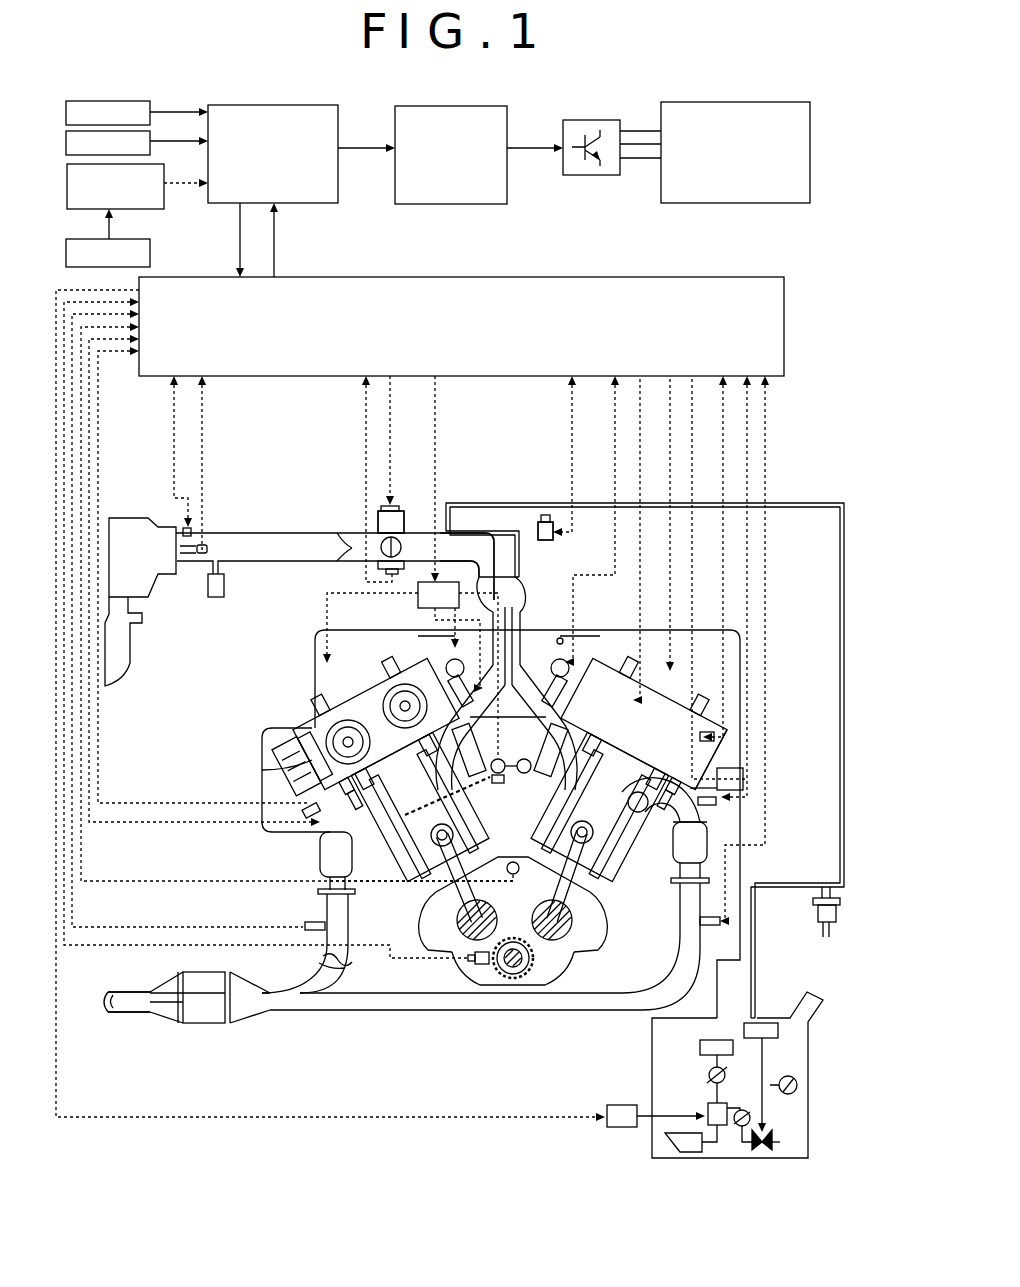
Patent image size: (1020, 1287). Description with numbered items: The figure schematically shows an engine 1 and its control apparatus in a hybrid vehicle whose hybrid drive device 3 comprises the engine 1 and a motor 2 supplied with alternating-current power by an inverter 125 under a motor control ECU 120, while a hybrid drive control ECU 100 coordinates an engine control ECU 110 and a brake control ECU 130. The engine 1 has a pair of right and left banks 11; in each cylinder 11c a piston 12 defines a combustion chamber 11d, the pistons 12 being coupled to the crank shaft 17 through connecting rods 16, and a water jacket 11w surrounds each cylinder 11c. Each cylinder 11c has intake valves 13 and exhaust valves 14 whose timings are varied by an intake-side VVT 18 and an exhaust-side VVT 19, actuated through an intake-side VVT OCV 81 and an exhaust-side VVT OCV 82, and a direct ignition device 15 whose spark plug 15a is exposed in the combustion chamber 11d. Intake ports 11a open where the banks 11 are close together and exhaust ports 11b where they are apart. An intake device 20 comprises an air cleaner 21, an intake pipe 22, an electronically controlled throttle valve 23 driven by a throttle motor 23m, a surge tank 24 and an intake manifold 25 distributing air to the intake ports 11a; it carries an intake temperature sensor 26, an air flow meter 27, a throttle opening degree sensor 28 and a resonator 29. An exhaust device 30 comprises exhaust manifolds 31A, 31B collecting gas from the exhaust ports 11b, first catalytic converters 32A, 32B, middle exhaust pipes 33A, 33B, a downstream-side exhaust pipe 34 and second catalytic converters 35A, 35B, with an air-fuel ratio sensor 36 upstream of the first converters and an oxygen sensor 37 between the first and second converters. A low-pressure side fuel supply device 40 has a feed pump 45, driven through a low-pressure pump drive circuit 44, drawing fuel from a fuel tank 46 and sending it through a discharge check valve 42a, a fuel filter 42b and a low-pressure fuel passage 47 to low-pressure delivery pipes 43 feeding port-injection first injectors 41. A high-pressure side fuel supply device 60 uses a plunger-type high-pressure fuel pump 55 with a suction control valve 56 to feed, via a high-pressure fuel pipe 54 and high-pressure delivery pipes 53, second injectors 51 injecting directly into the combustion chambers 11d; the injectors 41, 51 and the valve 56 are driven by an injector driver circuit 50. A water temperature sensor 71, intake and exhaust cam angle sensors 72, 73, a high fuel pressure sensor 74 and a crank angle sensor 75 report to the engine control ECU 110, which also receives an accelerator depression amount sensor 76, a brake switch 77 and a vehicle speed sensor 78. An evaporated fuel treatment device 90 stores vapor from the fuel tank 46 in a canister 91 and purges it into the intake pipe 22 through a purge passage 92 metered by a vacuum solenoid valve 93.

The engine 1 is at (785, 610).
The motor 2 is at (741, 162).
The hybrid drive device 3 is at (748, 96).
The banks 11 is at (312, 788).
The intake ports 11a is at (585, 930).
The exhaust ports 11b is at (700, 758).
The cylinder 11c is at (590, 905).
The combustion chamber 11d is at (348, 862).
The water jacket 11w is at (590, 870).
The piston 12 is at (596, 838).
The intake valves 13 is at (560, 783).
The exhaust valves 14 is at (720, 779).
The ignition devices 15 is at (665, 672).
The spark plug 15a is at (605, 830).
The connecting rods 16 is at (428, 915).
The crank shaft 17 is at (556, 940).
The intake-side variable valve timing mechanism 18 is at (404, 700).
The exhaust-side variable valve timing mechanism 19 is at (315, 774).
The intake device 20 is at (303, 515).
The air cleaner 21 is at (128, 528).
The intake pipe 22 is at (240, 533).
The electronically controlled throttle valve 23 is at (402, 546).
The electronically controlled throttle motor 23m is at (402, 503).
The surge tank 24 is at (481, 578).
The intake manifold 25 is at (560, 678).
The intake temperature sensor 26 is at (182, 528).
The air flow meter 27 is at (200, 556).
The throttle opening degree sensor 28 is at (384, 572).
The resonator 29 is at (215, 598).
The exhaust device 30 is at (300, 1025).
The exhaust manifold 31A is at (300, 830).
The exhaust manifold 31B is at (715, 822).
The first catalytic converter 32A is at (322, 862).
The first catalytic converter 32B is at (700, 850).
The middle exhaust pipe 33A is at (320, 988).
The middle exhaust pipe 33B is at (393, 1013).
The downstream-side exhaust pipe 34 is at (128, 1008).
The second catalytic converter 35A is at (205, 978).
The second catalytic converter 35B is at (207, 1024).
The air-fuel ratio sensor 36 is at (722, 800).
The oxygen sensor 37 is at (318, 921).
The low-pressure side fuel supply device 40 is at (561, 618).
The first injectors 41 is at (451, 670).
The discharge check valve 42a is at (708, 1074).
The fuel filter 42b is at (700, 1046).
The low-pressure delivery pipes 43 is at (558, 640).
The low-pressure pump drive circuit 44 is at (620, 1128).
The feed pump 45 is at (708, 1110).
The fuel tank 46 is at (712, 1160).
The low-pressure fuel passage 47 is at (742, 660).
The injector driver circuit 50 is at (450, 604).
The second injectors 51 is at (540, 742).
The high-pressure delivery pipes 53 is at (538, 770).
The high-pressure fuel pipe 54 is at (302, 713).
The high-pressure fuel pump 55 is at (325, 715).
The suction control valve 56 is at (318, 672).
The high-pressure side fuel supply device 60 is at (328, 711).
The water temperature sensor 71 is at (513, 861).
The intake cam angle sensor 72 is at (380, 676).
The exhaust cam angle sensor 73 is at (318, 762).
The high fuel pressure sensor 74 is at (498, 784).
The crank angle sensor 75 is at (472, 960).
The accelerator depression amount sensor 76 is at (122, 124).
The brake switch 77 is at (122, 264).
The vehicle speed sensor 78 is at (122, 154).
The intake-side VVT oil control valve 81 is at (594, 636).
The exhaust-side VVT oil control valve 82 is at (300, 735).
The evaporated fuel treatment device 90 is at (790, 496).
The canister 91 is at (812, 918).
The purge passage 92 is at (562, 503).
The vacuum solenoid valve 93 is at (538, 532).
The hybrid drive control ECU 100 is at (294, 162).
The engine control ECU 110 is at (482, 335).
The motor control ECU 120 is at (472, 162).
The inverter 125 is at (594, 120).
The brake control ECU 130 is at (136, 197).